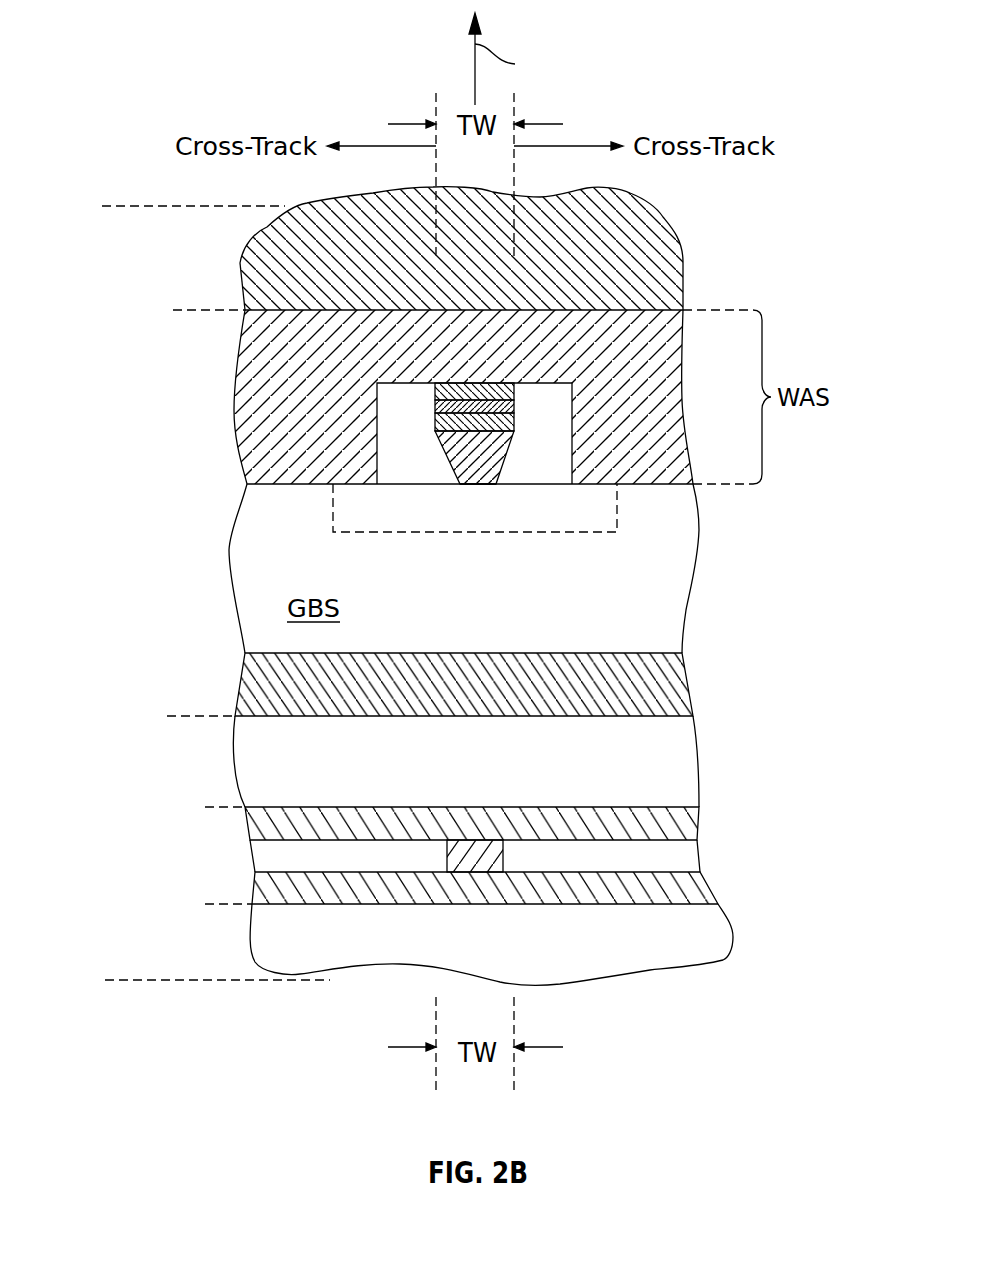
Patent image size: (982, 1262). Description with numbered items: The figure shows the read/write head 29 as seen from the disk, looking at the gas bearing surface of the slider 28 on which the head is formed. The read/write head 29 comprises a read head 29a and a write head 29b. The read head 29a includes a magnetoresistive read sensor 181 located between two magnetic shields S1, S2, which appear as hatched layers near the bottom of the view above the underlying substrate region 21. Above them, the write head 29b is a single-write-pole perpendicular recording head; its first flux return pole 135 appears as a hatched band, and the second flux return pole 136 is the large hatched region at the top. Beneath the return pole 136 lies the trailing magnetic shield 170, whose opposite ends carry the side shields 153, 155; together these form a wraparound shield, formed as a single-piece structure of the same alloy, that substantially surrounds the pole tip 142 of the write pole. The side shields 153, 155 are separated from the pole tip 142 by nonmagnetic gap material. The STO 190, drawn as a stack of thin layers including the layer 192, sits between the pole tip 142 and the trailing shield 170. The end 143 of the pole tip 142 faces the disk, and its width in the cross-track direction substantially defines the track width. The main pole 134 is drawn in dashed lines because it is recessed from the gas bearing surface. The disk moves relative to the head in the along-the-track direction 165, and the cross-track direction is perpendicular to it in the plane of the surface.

The along-the-track direction 165 is at (475, 34).
The second flux return pole 136 is at (663, 231).
The trailing magnetic shield 170 is at (553, 312).
The side shield 153 is at (668, 366).
The side shield 155 is at (247, 372).
The STO 190 is at (434, 383).
The spin polarization layer 192 is at (514, 406).
The pole tip 142 is at (508, 447).
The end 143 is at (473, 470).
The main pole 134 is at (578, 522).
The first flux return pole 135 is at (680, 667).
The slider 28 is at (698, 737).
The magnetic shield S2 is at (687, 817).
The magnetoresistive read element or sensor 181 is at (503, 848).
The magnetic shield S1 is at (698, 880).
The substrate 21 is at (672, 907).
The read/write head 29 is at (102, 206).
The read head 29a is at (211, 807).
The write head 29b is at (173, 310).